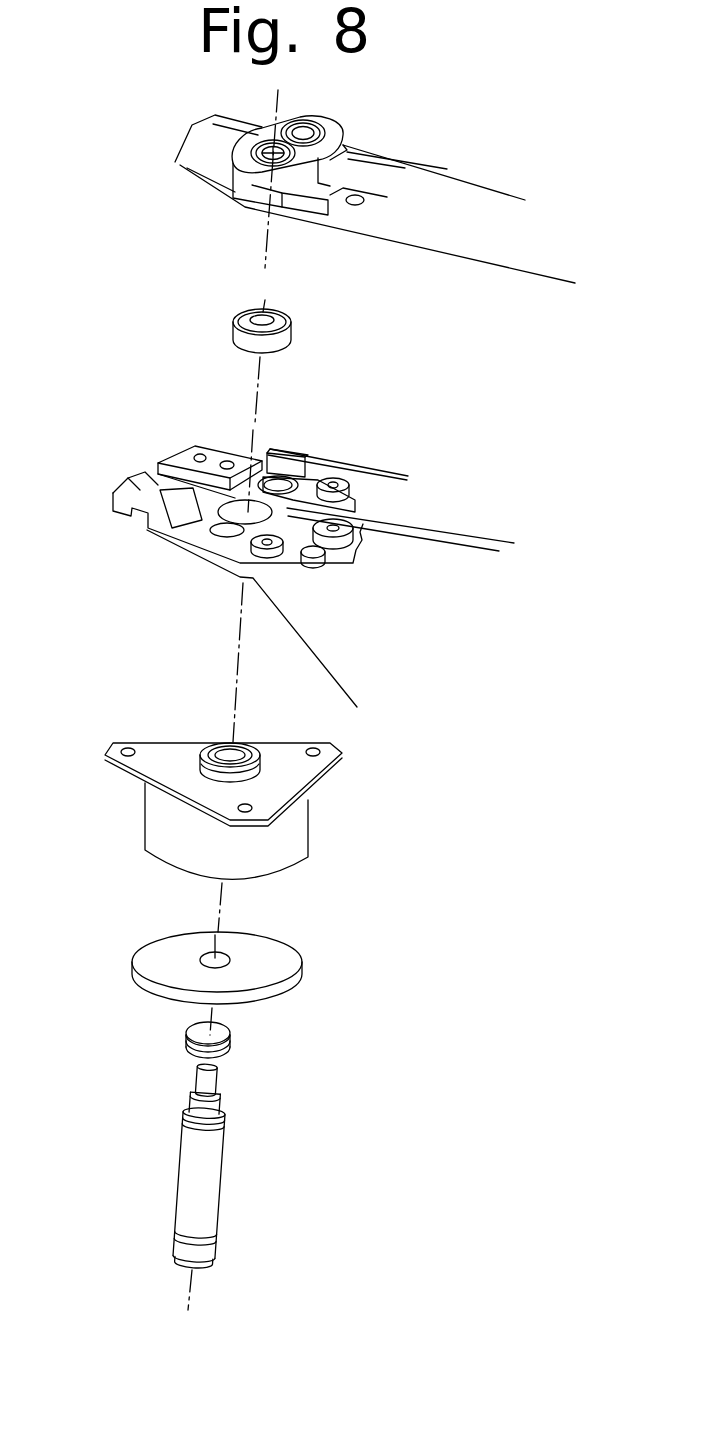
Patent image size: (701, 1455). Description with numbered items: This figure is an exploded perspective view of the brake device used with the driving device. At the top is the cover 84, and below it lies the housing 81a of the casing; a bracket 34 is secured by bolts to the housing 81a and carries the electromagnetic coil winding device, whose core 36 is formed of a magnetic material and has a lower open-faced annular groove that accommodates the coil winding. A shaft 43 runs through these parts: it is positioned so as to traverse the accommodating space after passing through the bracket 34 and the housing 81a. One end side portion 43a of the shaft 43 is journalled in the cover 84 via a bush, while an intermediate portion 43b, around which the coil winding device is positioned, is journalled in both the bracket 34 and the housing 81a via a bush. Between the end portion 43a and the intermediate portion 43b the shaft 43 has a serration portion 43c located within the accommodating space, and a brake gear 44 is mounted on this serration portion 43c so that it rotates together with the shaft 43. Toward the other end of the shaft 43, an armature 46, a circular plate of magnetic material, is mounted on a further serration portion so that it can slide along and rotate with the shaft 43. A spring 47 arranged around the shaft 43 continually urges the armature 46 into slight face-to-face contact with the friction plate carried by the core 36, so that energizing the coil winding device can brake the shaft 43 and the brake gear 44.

The cover 84 is at (367, 177).
The brake gear 44 is at (288, 337).
The housing 81a is at (200, 535).
The bracket 34 is at (297, 772).
The core 36 is at (295, 845).
The armature 46 is at (278, 963).
The spring 47 is at (233, 1035).
The shaft 43 is at (217, 1160).
The end side portion 43a is at (208, 1085).
The intermediate portion 43b is at (210, 1207).
The serration portion 43c is at (197, 1105).